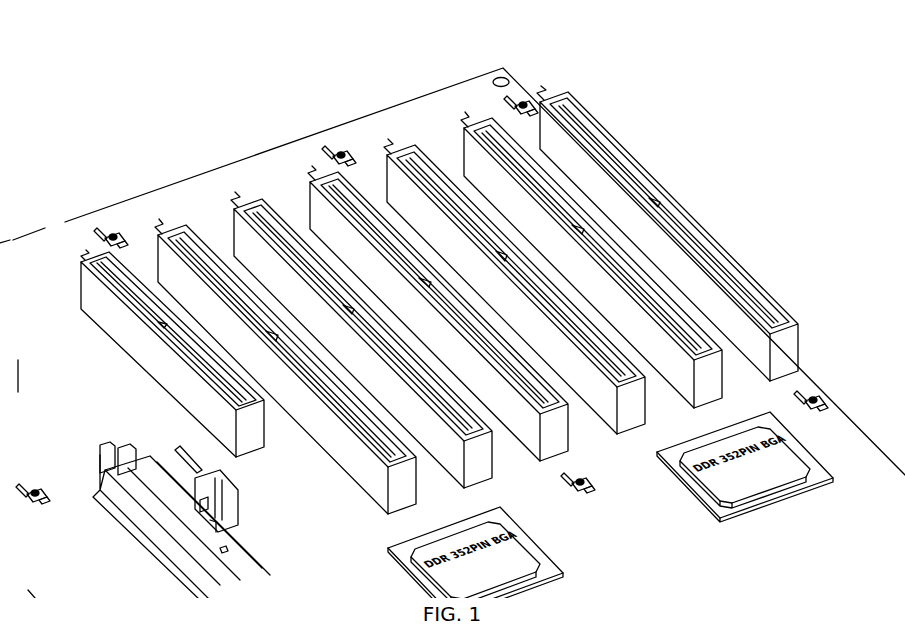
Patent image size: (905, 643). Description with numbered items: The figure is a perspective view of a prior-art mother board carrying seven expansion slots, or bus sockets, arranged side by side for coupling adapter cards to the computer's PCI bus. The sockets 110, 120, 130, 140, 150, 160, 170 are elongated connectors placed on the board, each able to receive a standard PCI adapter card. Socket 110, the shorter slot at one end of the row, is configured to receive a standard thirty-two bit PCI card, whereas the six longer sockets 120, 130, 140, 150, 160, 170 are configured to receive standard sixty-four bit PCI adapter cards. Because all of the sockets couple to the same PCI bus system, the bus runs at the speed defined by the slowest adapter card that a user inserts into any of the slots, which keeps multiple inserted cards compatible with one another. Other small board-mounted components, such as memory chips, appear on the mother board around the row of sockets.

The slot (bus socket) 110 is at (96, 248).
The slot (bus socket) 120 is at (190, 231).
The slot (bus socket) 130 is at (282, 218).
The slot (bus socket) 140 is at (350, 187).
The slot (bus socket) 150 is at (427, 162).
The slot (bus socket) 160 is at (468, 126).
The slot (bus socket) 170 is at (667, 233).